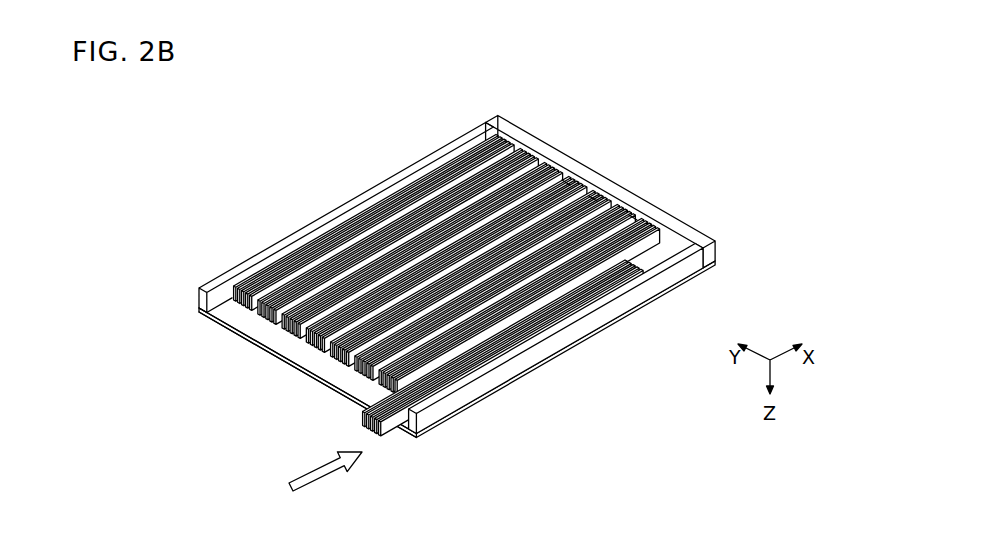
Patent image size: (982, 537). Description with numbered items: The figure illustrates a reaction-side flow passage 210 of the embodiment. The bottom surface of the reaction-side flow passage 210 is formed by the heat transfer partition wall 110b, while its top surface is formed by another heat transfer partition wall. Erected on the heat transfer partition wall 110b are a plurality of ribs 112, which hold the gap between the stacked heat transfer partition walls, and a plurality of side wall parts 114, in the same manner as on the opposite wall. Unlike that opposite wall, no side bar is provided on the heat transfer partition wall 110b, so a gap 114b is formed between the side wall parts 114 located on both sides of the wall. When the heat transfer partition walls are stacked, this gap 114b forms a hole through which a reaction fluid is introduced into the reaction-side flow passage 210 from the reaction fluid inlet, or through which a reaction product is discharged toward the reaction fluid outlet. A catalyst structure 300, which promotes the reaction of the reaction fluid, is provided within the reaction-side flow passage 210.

The reaction-side flow passage 210 is at (433, 279).
The catalyst structure 300 is at (413, 178).
The side wall part 114 is at (487, 133).
The gap 114b is at (525, 150).
The rib 112 is at (635, 217).
The heat transfer partition wall 110b is at (300, 355).